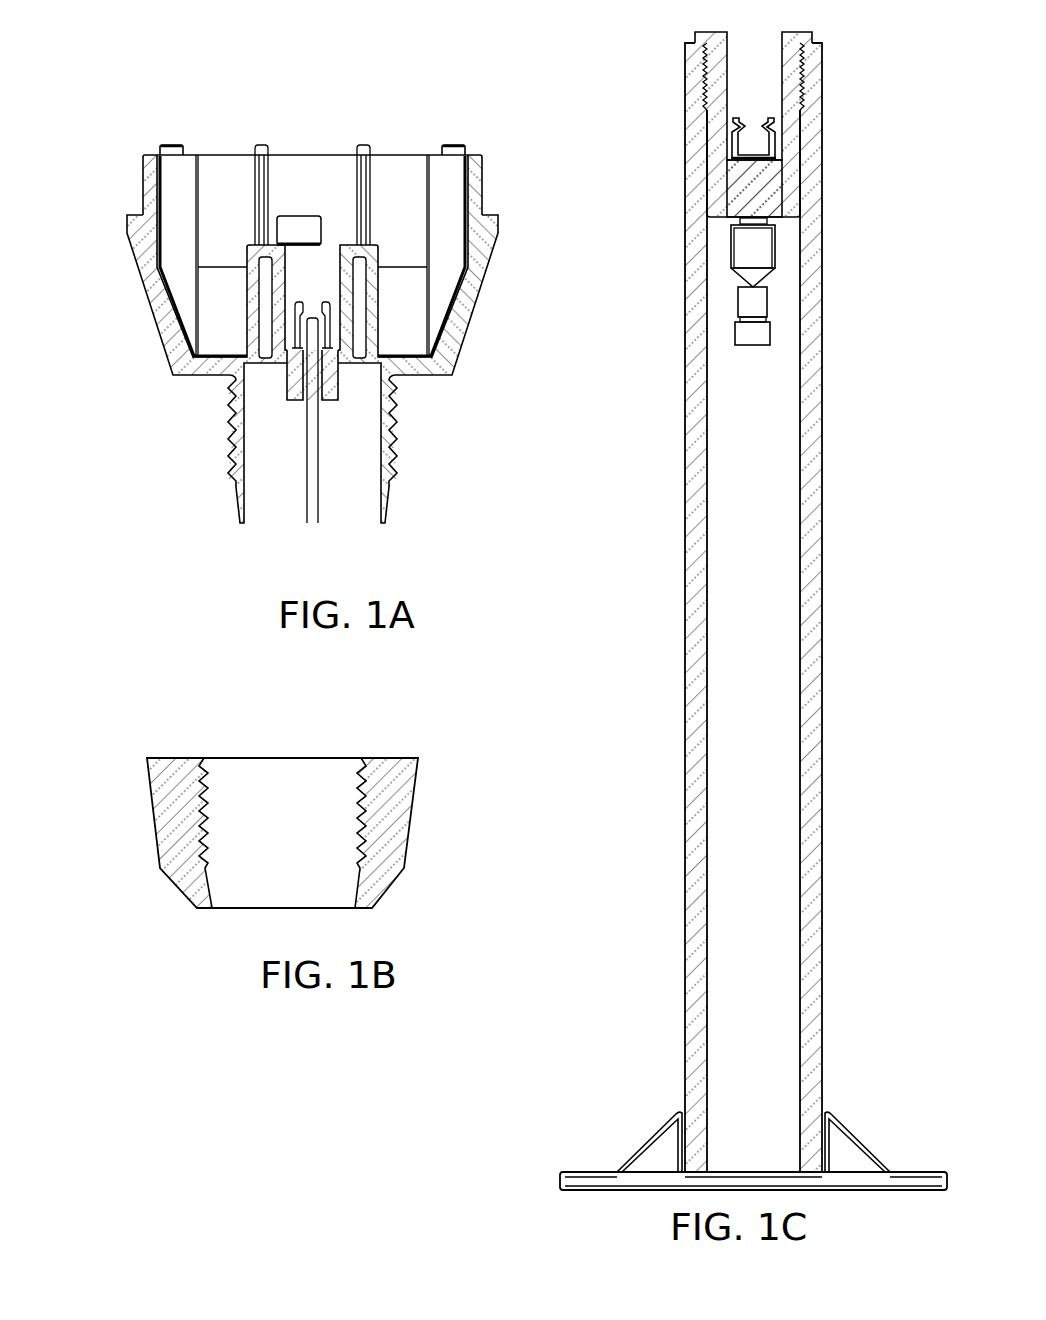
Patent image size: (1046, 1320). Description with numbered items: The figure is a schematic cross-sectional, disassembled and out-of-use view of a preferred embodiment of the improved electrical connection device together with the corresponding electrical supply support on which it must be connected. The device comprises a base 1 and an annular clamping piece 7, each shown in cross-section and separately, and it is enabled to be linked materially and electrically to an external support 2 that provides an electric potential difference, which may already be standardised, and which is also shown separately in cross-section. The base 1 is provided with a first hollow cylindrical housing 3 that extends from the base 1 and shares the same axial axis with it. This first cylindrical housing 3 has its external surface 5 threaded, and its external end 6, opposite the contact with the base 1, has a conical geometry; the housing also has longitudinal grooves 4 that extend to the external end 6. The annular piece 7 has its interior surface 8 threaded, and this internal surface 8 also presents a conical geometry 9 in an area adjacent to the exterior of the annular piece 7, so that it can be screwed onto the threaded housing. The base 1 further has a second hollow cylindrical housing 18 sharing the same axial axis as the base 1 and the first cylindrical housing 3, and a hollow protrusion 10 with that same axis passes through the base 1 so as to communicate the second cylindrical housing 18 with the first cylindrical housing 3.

In FIG. 1A, the base 1 is at (359, 334).
In FIG. 1A, the second hollow cylindrical housing 18 is at (148, 296).
In FIG. 1A, the external surface 5 is at (174, 433).
In FIG. 1A, the first hollow cylindrical housing 3 is at (441, 439).
In FIG. 1A, the hollow protrusion 10 is at (397, 391).
In FIG. 1A, the longitudinal grooves 4 is at (368, 487).
In FIG. 1A, the external end 6 is at (188, 527).
In FIG. 1B, the annular clamping piece 7 is at (231, 833).
In FIG. 1B, the interior surface 8 is at (415, 826).
In FIG. 1B, the conical geometry 9 is at (162, 899).
In FIG. 1C, the external support 2 is at (760, 611).